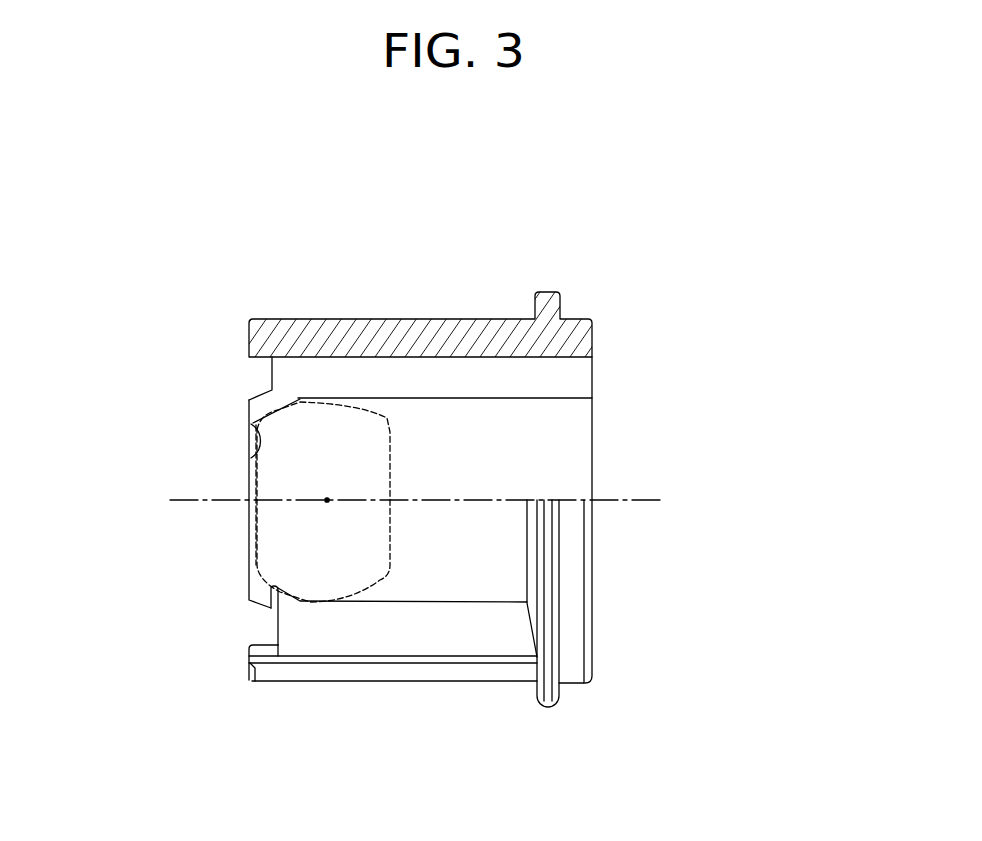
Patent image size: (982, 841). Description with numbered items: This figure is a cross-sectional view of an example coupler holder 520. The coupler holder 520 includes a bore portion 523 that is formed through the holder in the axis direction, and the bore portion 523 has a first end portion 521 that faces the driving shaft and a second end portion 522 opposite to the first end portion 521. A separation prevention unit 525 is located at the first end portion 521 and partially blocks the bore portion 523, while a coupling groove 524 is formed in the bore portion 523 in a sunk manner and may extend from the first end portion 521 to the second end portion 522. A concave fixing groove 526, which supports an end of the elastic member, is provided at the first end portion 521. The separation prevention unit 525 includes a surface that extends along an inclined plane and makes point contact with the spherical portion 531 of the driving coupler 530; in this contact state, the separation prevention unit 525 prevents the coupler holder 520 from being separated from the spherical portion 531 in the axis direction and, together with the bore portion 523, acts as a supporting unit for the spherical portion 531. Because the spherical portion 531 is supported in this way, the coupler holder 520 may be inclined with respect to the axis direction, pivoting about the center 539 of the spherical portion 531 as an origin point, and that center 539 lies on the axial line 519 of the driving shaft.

The coupler holder 520 is at (725, 247).
The second end portion 522 is at (592, 340).
The bore portion 523 is at (580, 450).
The coupling groove 524 is at (580, 377).
The concave fixing groove 526 is at (268, 378).
The first end portion 521 is at (248, 414).
The separation prevention unit 525 is at (248, 457).
The spherical portion 531 is at (275, 410).
The driving coupler 530 is at (353, 417).
The axial line 519 is at (200, 500).
The center 539 is at (327, 500).